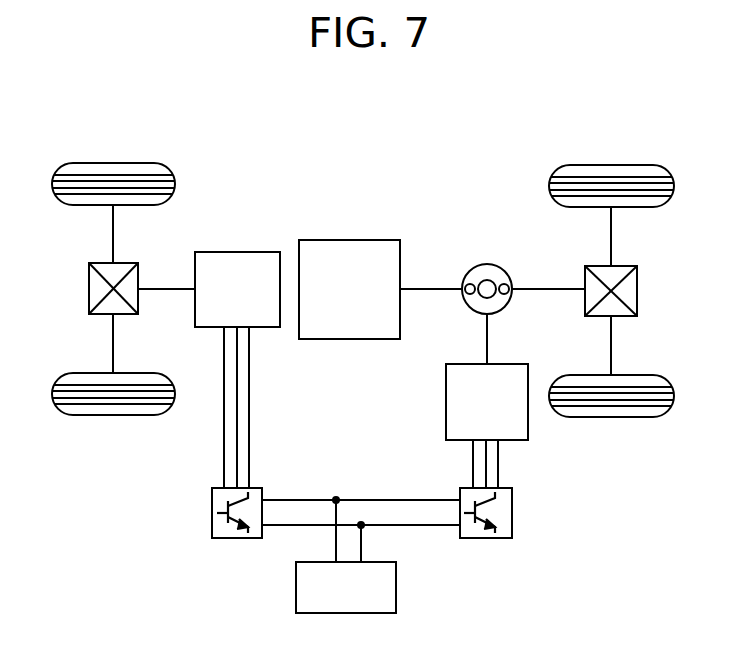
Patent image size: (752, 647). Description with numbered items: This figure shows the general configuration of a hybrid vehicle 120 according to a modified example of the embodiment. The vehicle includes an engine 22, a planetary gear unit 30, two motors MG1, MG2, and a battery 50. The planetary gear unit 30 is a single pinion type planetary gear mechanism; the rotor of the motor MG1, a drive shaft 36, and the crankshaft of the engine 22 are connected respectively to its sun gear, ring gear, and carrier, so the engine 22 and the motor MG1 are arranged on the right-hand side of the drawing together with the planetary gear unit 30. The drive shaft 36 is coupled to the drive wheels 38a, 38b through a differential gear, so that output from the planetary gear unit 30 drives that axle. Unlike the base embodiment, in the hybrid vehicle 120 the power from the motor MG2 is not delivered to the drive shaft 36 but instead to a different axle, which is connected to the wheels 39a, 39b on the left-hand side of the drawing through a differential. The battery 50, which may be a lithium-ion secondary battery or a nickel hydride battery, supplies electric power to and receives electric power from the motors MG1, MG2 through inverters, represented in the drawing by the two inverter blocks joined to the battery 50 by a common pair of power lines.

The hybrid vehicle 120 is at (493, 141).
The engine 22 is at (351, 240).
The planetary gear unit 30 is at (489, 264).
The drive shaft 36 is at (549, 288).
The drive wheel 38a is at (611, 165).
The drive wheel 38b is at (609, 417).
The wheel 39a is at (113, 163).
The wheel 39b is at (113, 415).
The battery 50 is at (397, 590).
The motor MG1 is at (446, 401).
The motor MG2 is at (236, 252).